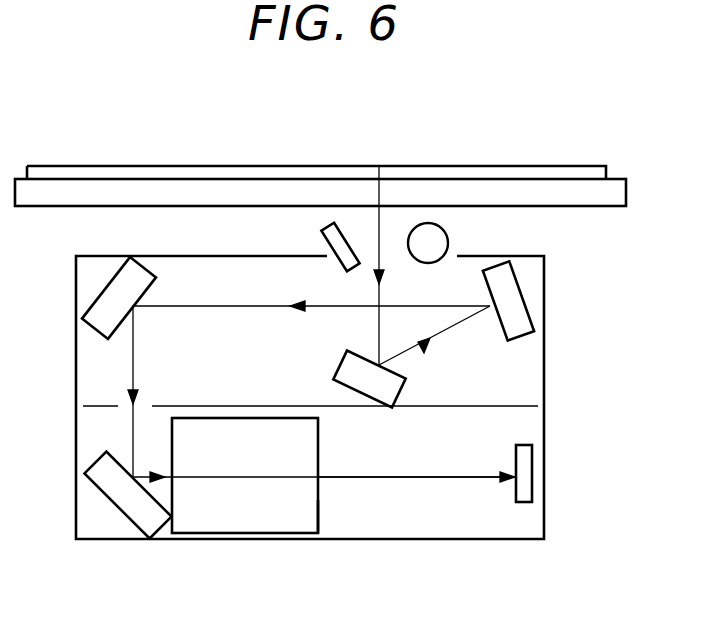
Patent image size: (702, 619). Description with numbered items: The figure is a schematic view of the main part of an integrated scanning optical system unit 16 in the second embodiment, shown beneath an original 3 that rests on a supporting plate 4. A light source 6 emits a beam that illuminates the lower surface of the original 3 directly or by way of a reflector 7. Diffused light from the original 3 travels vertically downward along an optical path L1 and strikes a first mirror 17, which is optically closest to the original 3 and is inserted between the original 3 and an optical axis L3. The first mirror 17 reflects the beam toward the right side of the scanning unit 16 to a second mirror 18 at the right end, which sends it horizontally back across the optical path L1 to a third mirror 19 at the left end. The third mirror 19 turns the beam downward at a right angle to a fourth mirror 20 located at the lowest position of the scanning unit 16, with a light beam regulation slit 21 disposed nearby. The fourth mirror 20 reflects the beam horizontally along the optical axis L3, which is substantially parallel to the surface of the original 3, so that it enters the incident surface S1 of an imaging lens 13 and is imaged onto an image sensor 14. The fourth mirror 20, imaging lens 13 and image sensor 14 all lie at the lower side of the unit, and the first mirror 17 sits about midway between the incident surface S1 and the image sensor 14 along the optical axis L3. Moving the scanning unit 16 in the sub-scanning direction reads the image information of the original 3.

The original 3 is at (418, 170).
The disc table / substrate 4 is at (604, 190).
The light source 6 is at (434, 243).
The reflector 7 is at (335, 243).
The imaging lens 13 is at (280, 452).
The image sensor 14 is at (522, 455).
The integrated scanning optical system unit 16 is at (546, 513).
The first mirror 17 is at (355, 375).
The second mirror 18 is at (506, 310).
The third mirror 19 is at (112, 329).
The fourth mirror 20 is at (126, 498).
The light beam regulation slit 21 is at (170, 406).
The optical path L1 is at (382, 288).
The optical axis L3 is at (378, 478).
The incident surface S1 is at (320, 505).